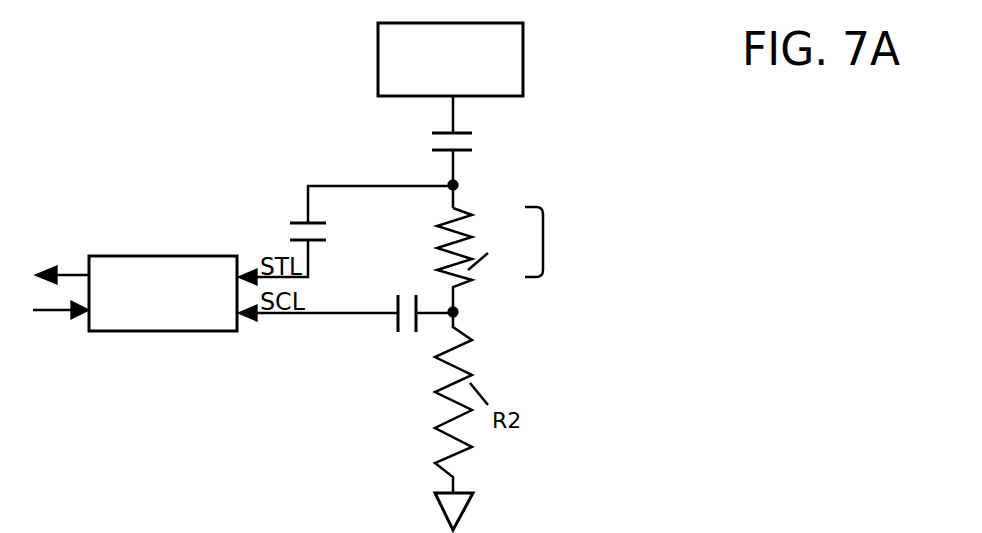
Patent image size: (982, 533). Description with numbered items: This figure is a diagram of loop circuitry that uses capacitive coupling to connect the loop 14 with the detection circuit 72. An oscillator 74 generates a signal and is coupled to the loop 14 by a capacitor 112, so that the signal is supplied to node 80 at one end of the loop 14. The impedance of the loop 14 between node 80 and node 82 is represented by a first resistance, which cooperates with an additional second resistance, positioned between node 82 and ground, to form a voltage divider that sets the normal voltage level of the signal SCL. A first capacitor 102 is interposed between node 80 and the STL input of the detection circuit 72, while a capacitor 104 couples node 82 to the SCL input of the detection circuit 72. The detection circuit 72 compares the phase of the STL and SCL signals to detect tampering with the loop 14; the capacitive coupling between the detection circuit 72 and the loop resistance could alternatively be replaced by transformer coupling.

The oscillator 74 is at (525, 43).
The capacitor 112 is at (426, 145).
The node 80 is at (450, 189).
The first capacitor 102 is at (290, 217).
The detection circuit 72 is at (166, 323).
The capacitor 104 is at (393, 332).
The loop 14 is at (546, 224).
The node 82 is at (458, 313).